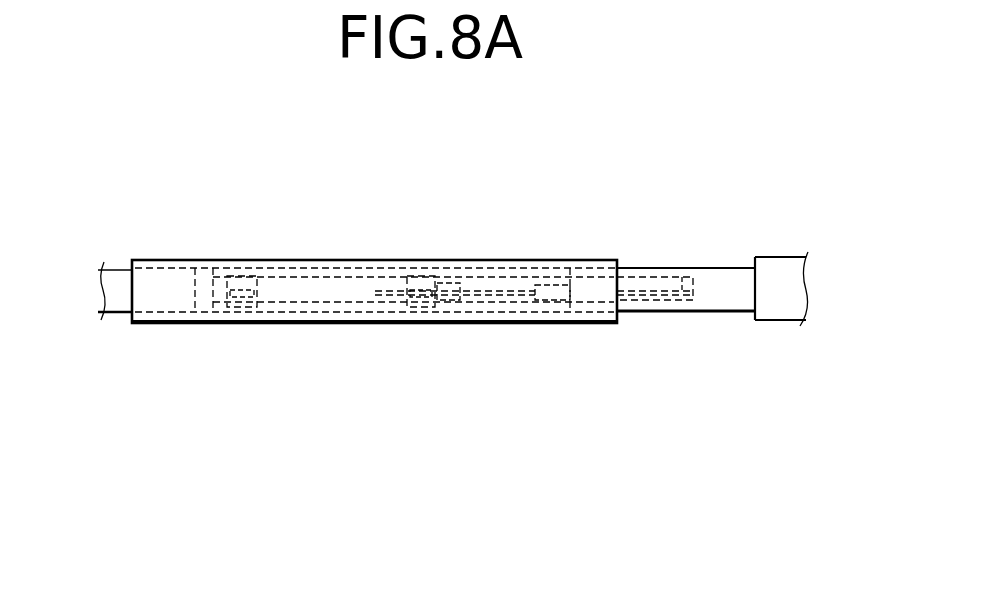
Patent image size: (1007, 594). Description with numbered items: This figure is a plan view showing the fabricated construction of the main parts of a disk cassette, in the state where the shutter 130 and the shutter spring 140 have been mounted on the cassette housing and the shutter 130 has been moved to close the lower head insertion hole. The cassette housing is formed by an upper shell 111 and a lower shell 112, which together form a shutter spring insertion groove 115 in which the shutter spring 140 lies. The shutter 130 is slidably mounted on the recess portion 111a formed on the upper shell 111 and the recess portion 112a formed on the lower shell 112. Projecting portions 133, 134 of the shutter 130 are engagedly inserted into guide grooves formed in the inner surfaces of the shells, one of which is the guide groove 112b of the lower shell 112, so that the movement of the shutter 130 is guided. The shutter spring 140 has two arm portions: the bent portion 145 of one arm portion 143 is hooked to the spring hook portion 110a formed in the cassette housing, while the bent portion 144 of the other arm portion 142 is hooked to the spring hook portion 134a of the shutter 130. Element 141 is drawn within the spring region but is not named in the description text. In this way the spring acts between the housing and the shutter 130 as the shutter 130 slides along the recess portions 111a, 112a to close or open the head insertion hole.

The spring hook portion 110a is at (628, 283).
The upper shell 111 is at (793, 257).
The recess portion 111a is at (747, 268).
The lower shell 112 is at (783, 322).
The recess portion 112a is at (705, 312).
The guide groove 112b is at (293, 300).
The shutter spring insertion groove 115 is at (370, 265).
The shutter 130 is at (345, 260).
The projecting portion 133 is at (233, 268).
The projecting portion 134 is at (430, 268).
The spring hook portion 134a is at (447, 283).
The shutter spring 140 is at (488, 398).
The base plate 141 is at (558, 300).
The arm portion 142 is at (520, 270).
The arm portion 143 is at (657, 310).
The bent portion 144 is at (437, 300).
The bent portion 145 is at (697, 268).